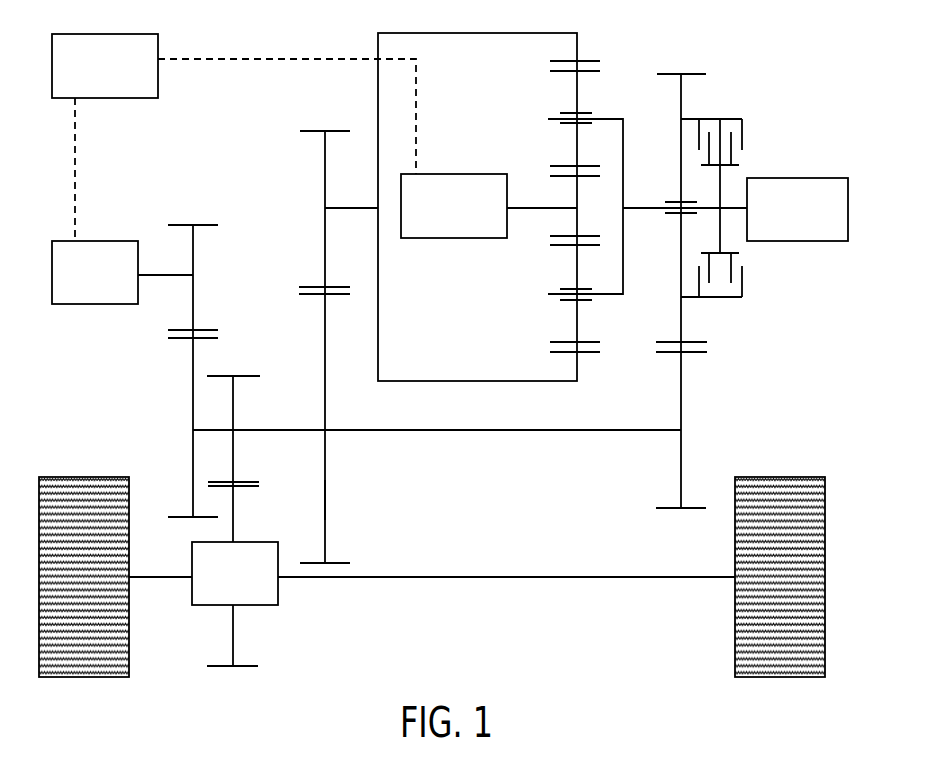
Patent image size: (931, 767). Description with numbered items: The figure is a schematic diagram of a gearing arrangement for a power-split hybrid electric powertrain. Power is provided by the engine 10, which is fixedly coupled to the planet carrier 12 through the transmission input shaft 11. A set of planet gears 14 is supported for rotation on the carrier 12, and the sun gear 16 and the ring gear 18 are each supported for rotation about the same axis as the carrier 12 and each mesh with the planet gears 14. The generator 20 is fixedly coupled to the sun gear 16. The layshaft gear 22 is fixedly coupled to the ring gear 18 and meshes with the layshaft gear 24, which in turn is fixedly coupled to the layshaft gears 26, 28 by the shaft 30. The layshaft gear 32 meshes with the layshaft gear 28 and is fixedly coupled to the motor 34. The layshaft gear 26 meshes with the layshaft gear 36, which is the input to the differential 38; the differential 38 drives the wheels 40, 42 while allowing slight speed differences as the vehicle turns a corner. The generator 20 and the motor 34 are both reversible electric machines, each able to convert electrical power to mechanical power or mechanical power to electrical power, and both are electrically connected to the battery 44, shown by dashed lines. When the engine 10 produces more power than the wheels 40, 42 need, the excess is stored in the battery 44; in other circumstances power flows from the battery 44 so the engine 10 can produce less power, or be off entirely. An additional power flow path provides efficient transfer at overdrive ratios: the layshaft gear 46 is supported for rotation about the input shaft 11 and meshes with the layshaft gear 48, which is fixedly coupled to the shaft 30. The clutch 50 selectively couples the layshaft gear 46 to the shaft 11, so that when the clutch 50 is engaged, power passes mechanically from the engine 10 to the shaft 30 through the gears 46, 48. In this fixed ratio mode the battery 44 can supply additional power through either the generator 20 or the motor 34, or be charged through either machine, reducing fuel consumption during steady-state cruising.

The engine 10 is at (800, 178).
The transmission input shaft 11 is at (646, 205).
The planet carrier 12 is at (625, 242).
The planet gears 14 is at (575, 327).
The sun gear 16 is at (575, 197).
The ring gear 18 is at (577, 367).
The generator 20 is at (453, 174).
The layshaft gear 22 is at (323, 178).
The layshaft gear 24 is at (325, 518).
The layshaft gear 26 is at (233, 400).
The layshaft gear 28 is at (193, 380).
The shaft 30 is at (530, 430).
The layshaft gear 32 is at (194, 247).
The motor 34 is at (102, 240).
The layshaft gear 36 is at (233, 632).
The differential 38 is at (278, 585).
The wheel 40 is at (82, 477).
The wheel 42 is at (735, 597).
The battery 44 is at (137, 98).
The layshaft gear 46 is at (681, 99).
The layshaft gear 48 is at (682, 443).
The clutch 50 is at (728, 118).